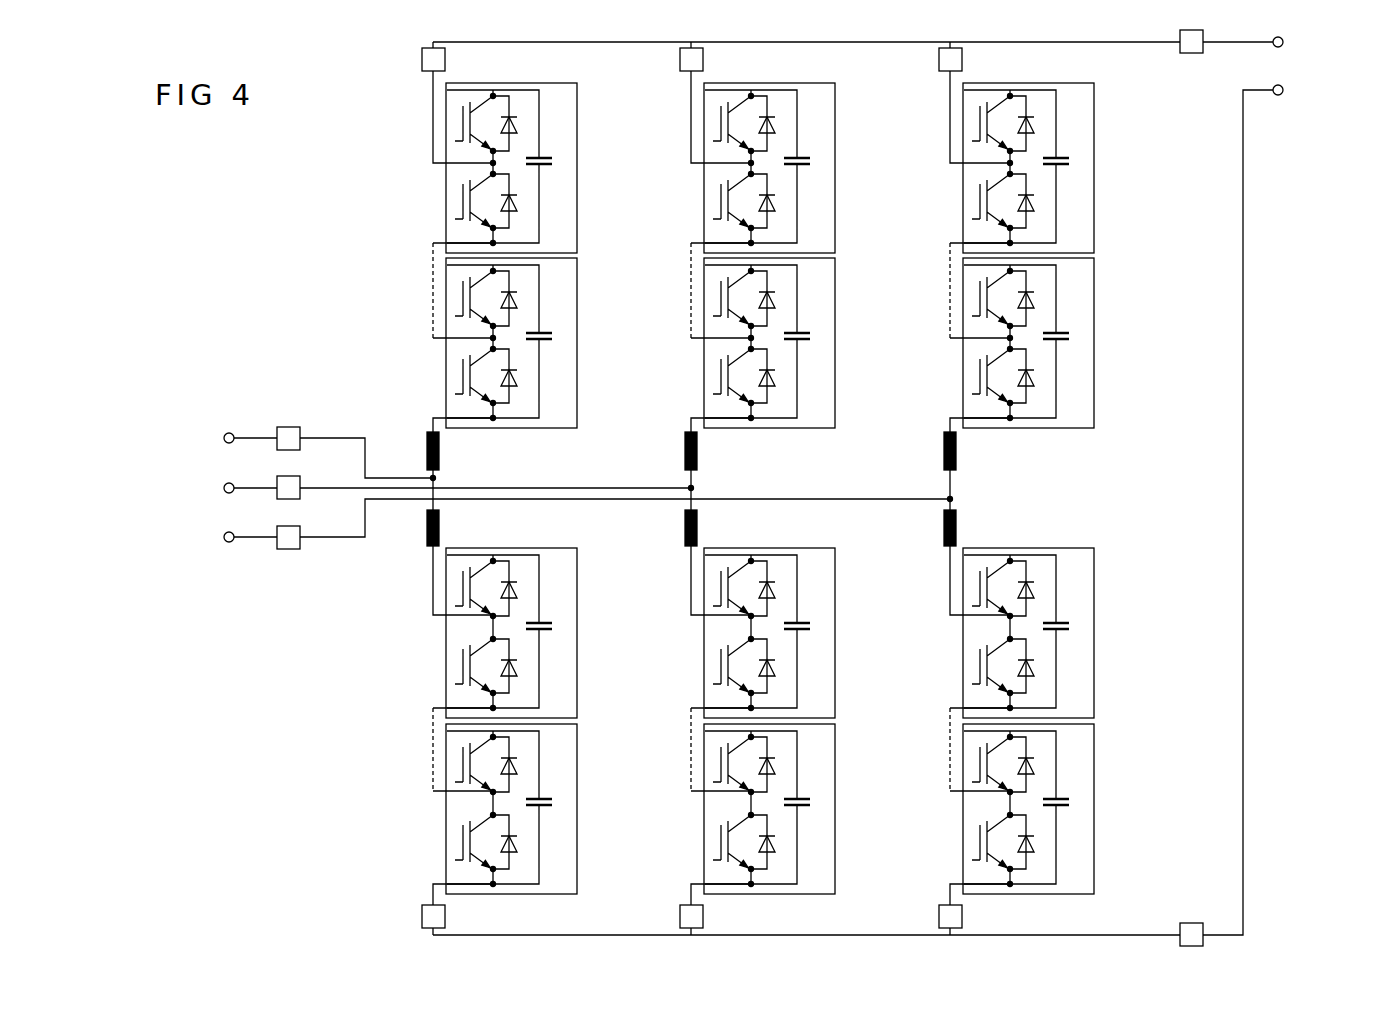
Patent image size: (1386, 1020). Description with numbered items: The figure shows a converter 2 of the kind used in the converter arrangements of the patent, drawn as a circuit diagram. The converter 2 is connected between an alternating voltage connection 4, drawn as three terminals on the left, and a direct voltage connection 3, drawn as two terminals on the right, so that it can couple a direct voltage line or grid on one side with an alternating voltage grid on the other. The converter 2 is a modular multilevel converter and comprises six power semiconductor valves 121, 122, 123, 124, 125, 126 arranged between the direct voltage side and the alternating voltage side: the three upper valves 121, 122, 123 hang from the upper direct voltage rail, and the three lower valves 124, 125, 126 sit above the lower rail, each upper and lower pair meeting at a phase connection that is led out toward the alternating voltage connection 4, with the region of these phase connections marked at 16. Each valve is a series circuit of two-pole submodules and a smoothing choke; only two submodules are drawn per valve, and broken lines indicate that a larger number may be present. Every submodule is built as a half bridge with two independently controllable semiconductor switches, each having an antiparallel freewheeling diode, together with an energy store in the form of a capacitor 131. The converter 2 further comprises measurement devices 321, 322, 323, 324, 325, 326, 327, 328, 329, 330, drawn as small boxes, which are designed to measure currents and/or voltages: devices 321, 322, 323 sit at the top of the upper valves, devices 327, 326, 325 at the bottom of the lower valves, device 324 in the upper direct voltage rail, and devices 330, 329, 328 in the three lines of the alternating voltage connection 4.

The converter 2 is at (300, 168).
The direct voltage connection 3 is at (1307, 55).
The alternating voltage connection 4 is at (232, 412).
The phase module connection 16 is at (1075, 494).
The power semiconductor valve 121 is at (388, 170).
The power semiconductor valve 122 is at (693, 160).
The power semiconductor valve 123 is at (952, 160).
The power semiconductor valve 124 is at (430, 815).
The power semiconductor valve 125 is at (689, 815).
The power semiconductor valve 126 is at (948, 815).
The capacitor 131 is at (545, 158).
The measurement device 321 is at (422, 60).
The measurement device 322 is at (703, 60).
The measurement device 323 is at (962, 60).
The measurement device 324 is at (1192, 53).
The measurement device 325 is at (962, 916).
The measurement device 326 is at (703, 916).
The measurement device 327 is at (445, 916).
The measurement device 328 is at (290, 549).
The measurement device 329 is at (277, 497).
The measurement device 330 is at (290, 428).